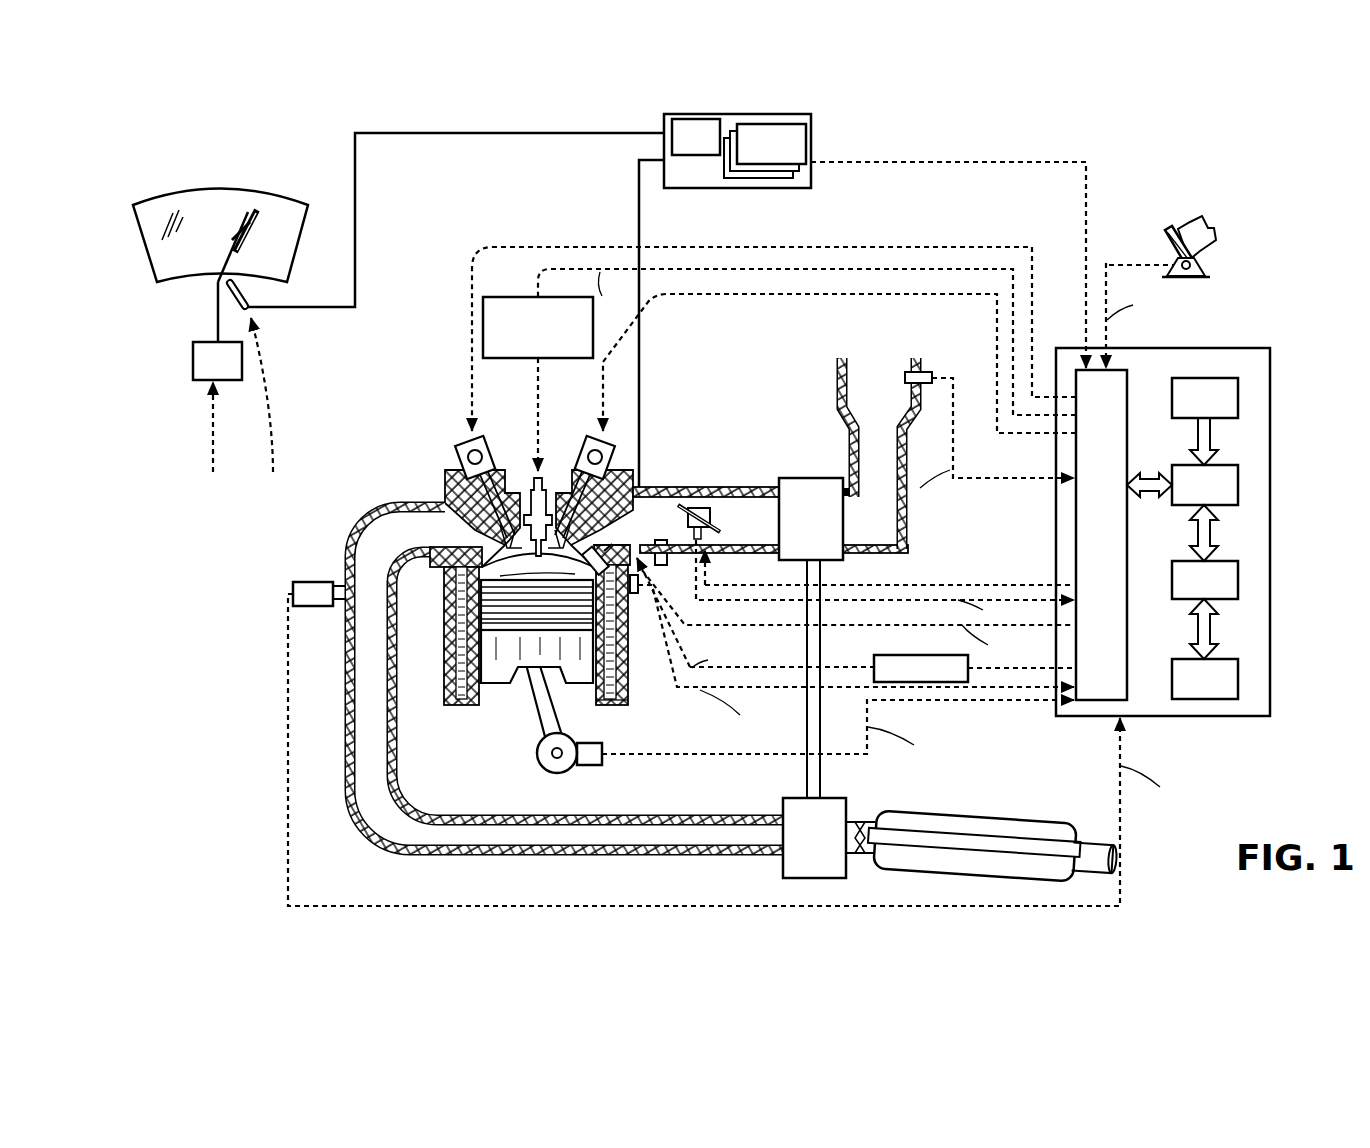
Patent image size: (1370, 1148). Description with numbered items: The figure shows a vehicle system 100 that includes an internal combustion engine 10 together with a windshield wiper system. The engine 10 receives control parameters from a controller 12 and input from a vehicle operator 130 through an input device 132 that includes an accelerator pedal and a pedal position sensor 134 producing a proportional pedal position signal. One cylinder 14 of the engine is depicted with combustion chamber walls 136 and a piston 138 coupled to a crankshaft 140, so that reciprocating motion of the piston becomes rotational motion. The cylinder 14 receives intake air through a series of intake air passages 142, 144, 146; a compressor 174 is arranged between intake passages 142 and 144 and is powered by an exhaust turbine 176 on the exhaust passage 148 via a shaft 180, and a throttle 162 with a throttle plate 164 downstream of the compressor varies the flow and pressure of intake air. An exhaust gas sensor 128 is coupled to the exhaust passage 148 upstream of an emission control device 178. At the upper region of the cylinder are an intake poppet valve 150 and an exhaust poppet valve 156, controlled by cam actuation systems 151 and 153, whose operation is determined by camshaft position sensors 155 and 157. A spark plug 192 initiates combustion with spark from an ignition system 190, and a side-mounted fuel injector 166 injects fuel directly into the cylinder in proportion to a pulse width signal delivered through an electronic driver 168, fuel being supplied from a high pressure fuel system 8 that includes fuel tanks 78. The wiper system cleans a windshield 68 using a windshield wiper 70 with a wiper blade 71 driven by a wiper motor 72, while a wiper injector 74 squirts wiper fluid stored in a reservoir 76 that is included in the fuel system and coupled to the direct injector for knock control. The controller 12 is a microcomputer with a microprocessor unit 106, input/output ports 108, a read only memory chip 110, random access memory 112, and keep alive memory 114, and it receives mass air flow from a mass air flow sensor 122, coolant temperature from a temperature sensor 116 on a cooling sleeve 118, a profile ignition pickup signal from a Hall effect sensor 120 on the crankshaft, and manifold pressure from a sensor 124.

The vehicle system 100 is at (175, 148).
The windshield 68 is at (198, 205).
The windshield wiper 70 is at (240, 217).
The wiper blade 71 is at (249, 232).
The wiper motor 72 is at (217, 331).
The wiper injector 74 is at (252, 295).
The high pressure fuel system 8 is at (754, 151).
The reservoir 76 is at (708, 148).
The fuel tanks 78 is at (783, 154).
The internal combustion engine 10 is at (437, 360).
The controller 12 is at (1272, 348).
The ignition system 190 is at (497, 297).
The intake poppet valve 150 is at (548, 490).
The exhaust passage 148 is at (430, 537).
The exhaust gas sensor 128 is at (293, 590).
The cylinder 14 is at (517, 649).
The combustion chamber walls 136 is at (480, 695).
The piston 138 is at (522, 660).
The crankshaft 140 is at (547, 770).
The Hall effect sensor 120 is at (590, 767).
The cooling sleeve 118 is at (628, 705).
The exhaust poppet valve 156 is at (480, 515).
The camshaft position sensor 157 is at (460, 448).
The cam actuation system 153 is at (484, 440).
The camshaft position sensor 155 is at (612, 452).
The cam actuation system 151 is at (588, 440).
The spark plug 192 is at (522, 492).
The fuel injector 166 is at (605, 549).
The temperature sensor 116 is at (640, 600).
The manifold absolute pressure sensor 124 is at (662, 566).
The intake air passage 146 is at (674, 531).
The intake air passage 144 is at (770, 531).
The throttle 162 is at (686, 497).
The throttle plate 164 is at (680, 505).
The compressor 174 is at (797, 478).
The intake air passage 142 is at (899, 402).
The mass air flow sensor 122 is at (925, 372).
The shaft 180 is at (822, 760).
The exhaust turbine 176 is at (780, 868).
The emission control device 178 is at (1035, 812).
The electronic driver 168 is at (874, 658).
The input/output ports 108 is at (1130, 376).
The read only memory chip 110 is at (1240, 392).
The microprocessor unit 106 is at (1240, 478).
The random access memory 112 is at (1240, 578).
The keep alive memory 114 is at (1240, 676).
The vehicle operator 130 is at (1207, 238).
The input device 132 is at (1170, 240).
The pedal position sensor 134 is at (1197, 266).